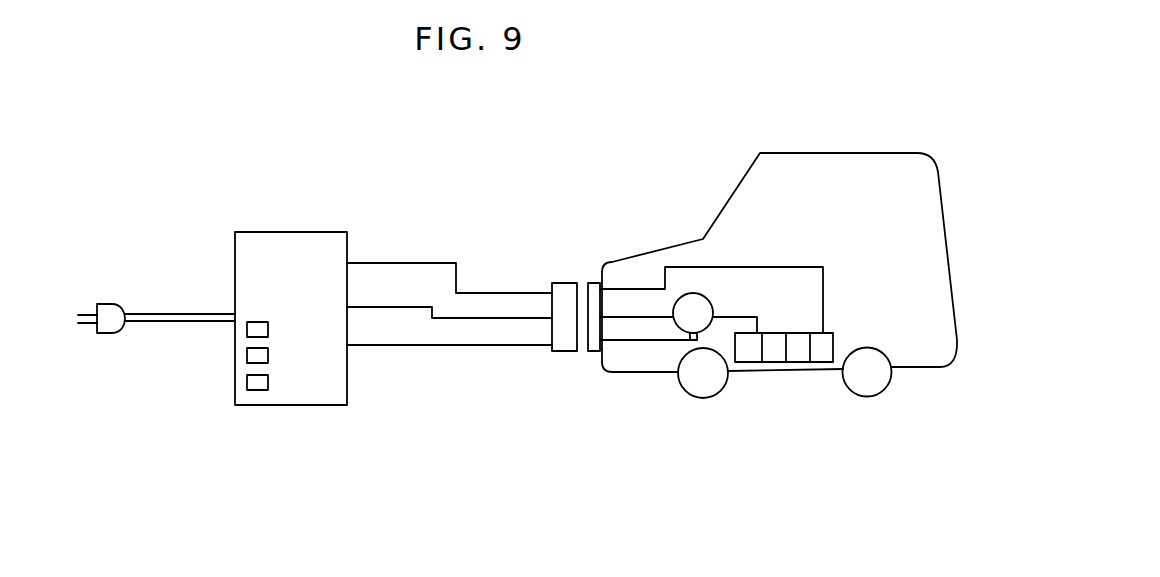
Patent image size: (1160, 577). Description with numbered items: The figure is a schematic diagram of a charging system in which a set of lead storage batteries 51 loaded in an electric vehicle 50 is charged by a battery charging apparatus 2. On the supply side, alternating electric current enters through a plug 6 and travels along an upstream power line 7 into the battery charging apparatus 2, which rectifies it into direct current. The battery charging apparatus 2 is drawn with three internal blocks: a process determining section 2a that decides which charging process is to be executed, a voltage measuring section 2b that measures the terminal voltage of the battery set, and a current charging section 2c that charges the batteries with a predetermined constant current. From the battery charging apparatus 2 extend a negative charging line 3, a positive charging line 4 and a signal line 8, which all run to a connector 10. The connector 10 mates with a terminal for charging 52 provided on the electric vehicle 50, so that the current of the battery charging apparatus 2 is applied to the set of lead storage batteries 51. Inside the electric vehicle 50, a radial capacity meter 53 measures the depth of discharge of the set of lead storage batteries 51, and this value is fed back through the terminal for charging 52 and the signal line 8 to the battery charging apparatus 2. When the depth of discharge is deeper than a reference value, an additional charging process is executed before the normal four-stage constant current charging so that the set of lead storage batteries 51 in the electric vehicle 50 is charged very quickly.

The battery charging apparatus 2 is at (298, 232).
The process determining section 2a is at (246, 332).
The voltage measuring section 2b is at (246, 357).
The current charging section 2c is at (246, 383).
The negative charging line 3 is at (375, 263).
The positive charging line 4 is at (475, 318).
The plug 6 is at (117, 304).
The upstream power line 7 is at (162, 300).
The signal line 8 is at (398, 346).
The connector 10 is at (563, 283).
The electric vehicle 50 is at (817, 153).
The set of lead storage batteries 51 is at (795, 362).
The terminal for charging 52 is at (594, 352).
The radial capacity meter 53 is at (693, 340).